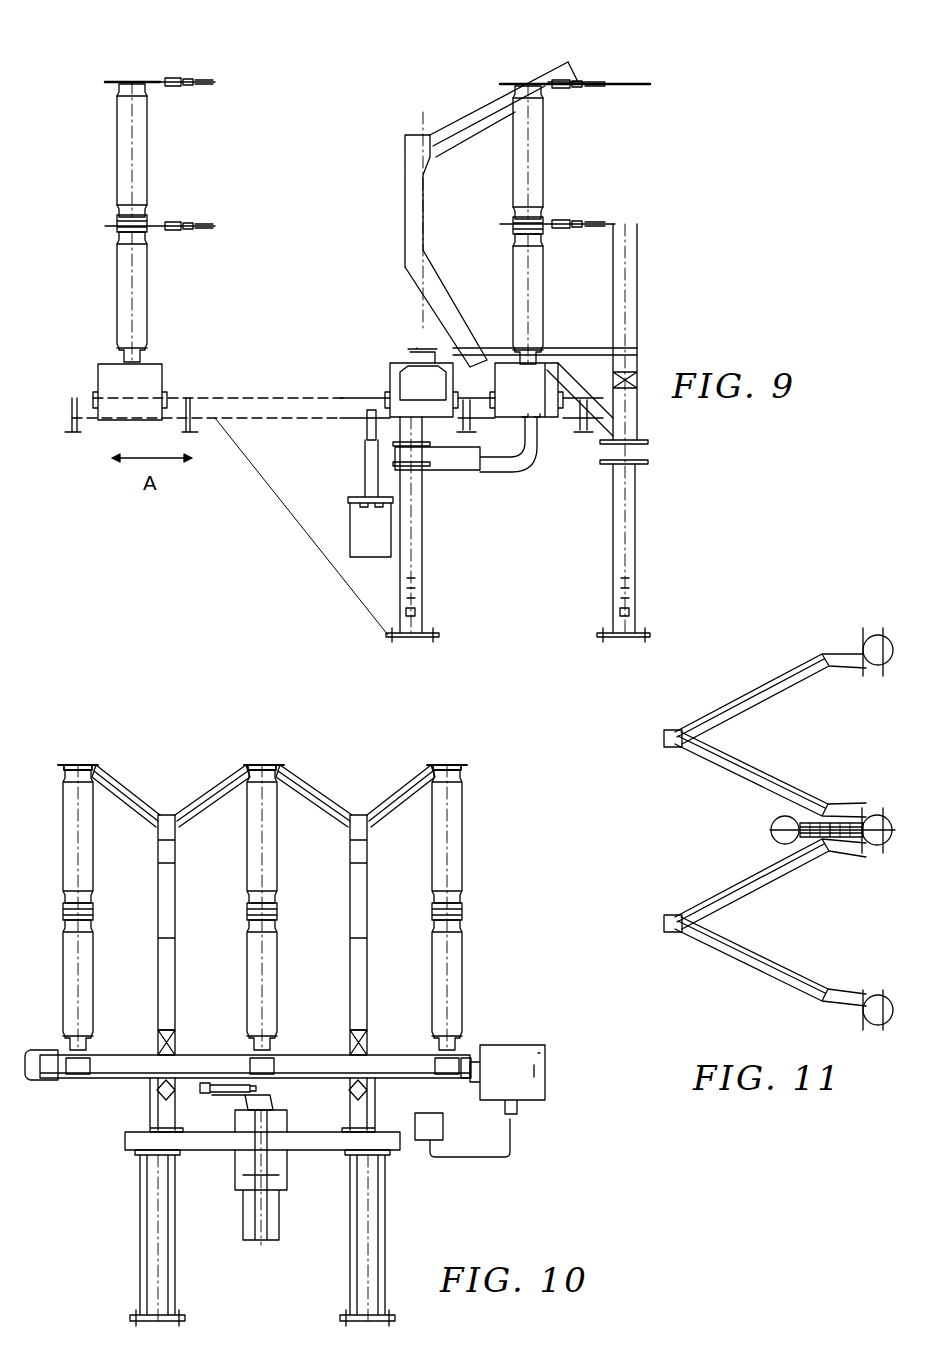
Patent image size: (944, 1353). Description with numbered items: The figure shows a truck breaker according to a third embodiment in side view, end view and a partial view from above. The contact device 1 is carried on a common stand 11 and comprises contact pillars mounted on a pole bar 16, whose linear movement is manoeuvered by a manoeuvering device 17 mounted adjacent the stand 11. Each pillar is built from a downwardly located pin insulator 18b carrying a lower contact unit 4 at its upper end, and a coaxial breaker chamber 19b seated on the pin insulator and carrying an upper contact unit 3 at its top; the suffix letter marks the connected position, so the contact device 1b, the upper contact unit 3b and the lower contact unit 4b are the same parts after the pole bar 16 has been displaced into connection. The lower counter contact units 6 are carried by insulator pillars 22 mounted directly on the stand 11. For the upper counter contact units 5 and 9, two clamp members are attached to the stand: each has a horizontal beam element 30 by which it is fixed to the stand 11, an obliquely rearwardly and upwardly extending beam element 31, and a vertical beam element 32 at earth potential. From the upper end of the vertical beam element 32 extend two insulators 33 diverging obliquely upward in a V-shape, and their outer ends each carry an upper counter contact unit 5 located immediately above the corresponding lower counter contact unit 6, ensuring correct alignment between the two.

In FIG. 9, the contact device 1 is at (133, 76).
In FIG. 9, the contact device in connected position 1b is at (530, 68).
In FIG. 9, the upper contact unit 3 is at (166, 88).
In FIG. 9, the upper contact unit in connected position 3b is at (570, 90).
In FIG. 9, the lower contact unit 4 is at (174, 220).
In FIG. 9, the lower contact unit in connected position 4b is at (586, 222).
In FIG. 9, the upper counter contact unit 5 is at (602, 80).
In FIG. 11, the upper counter contact unit 5 is at (874, 1000).
In FIG. 9, the lower counter contact unit 6 is at (630, 222).
In FIG. 11, the upper counter contact unit 9 is at (863, 635).
In FIG. 9, the common stand 11 is at (290, 566).
In FIG. 10, the common stand 11 is at (122, 1230).
In FIG. 10, the pole bar 16 is at (545, 1075).
In FIG. 10, the manoeuvering device 17 is at (287, 1214).
In FIG. 9, the pin insulator in connected position 18b is at (117, 299).
In FIG. 10, the pin insulator in connected position 18b is at (92, 975).
In FIG. 9, the breaker chamber in connected position 19b is at (117, 159).
In FIG. 10, the breaker chamber in connected position 19b is at (92, 851).
In FIG. 9, the insulator pillar 22 is at (637, 268).
In FIG. 9, the horizontal beam element 30 is at (593, 352).
In FIG. 10, the horizontal beam element 30 is at (175, 1045).
In FIG. 9, the oblique beam element 31 is at (437, 297).
In FIG. 10, the oblique beam element 31 is at (175, 977).
In FIG. 9, the vertical beam element 32 is at (405, 199).
In FIG. 10, the vertical beam element 32 is at (175, 902).
In FIG. 11, the vertical beam element 32 is at (664, 744).
In FIG. 9, the insulators 33 is at (467, 116).
In FIG. 10, the insulators 33 is at (203, 788).
In FIG. 11, the insulators 33 is at (735, 942).